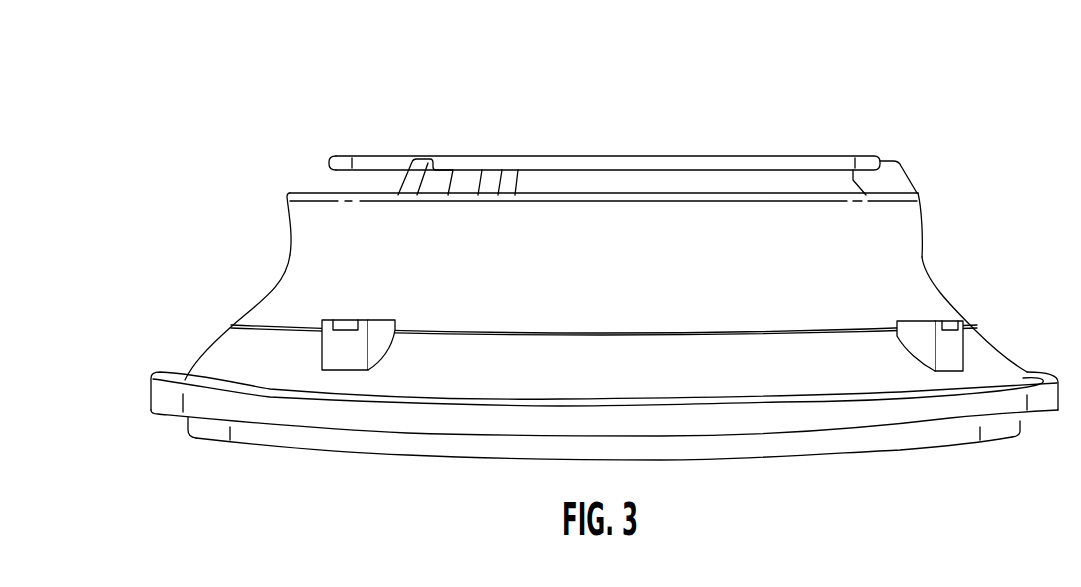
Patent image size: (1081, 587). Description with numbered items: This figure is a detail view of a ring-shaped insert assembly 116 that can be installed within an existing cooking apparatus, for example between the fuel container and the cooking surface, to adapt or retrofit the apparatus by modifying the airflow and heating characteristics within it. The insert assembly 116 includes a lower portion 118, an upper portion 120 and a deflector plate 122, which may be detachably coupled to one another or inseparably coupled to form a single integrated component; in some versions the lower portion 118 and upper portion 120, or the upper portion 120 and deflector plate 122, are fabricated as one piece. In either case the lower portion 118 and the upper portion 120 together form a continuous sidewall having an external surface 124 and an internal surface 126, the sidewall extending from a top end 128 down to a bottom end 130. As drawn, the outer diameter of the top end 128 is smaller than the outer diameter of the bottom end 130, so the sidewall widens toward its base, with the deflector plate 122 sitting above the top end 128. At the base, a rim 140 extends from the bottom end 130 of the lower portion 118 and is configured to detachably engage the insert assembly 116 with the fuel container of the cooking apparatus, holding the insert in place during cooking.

The insert assembly 116 is at (163, 135).
The lower portion 118 is at (223, 353).
The upper portion 120 is at (903, 252).
The deflector plate 122 is at (716, 156).
The external surface 124 is at (256, 291).
The internal surface 126 is at (320, 173).
The top end 128 is at (925, 168).
The bottom end 130 is at (976, 453).
The rim 140 is at (347, 443).